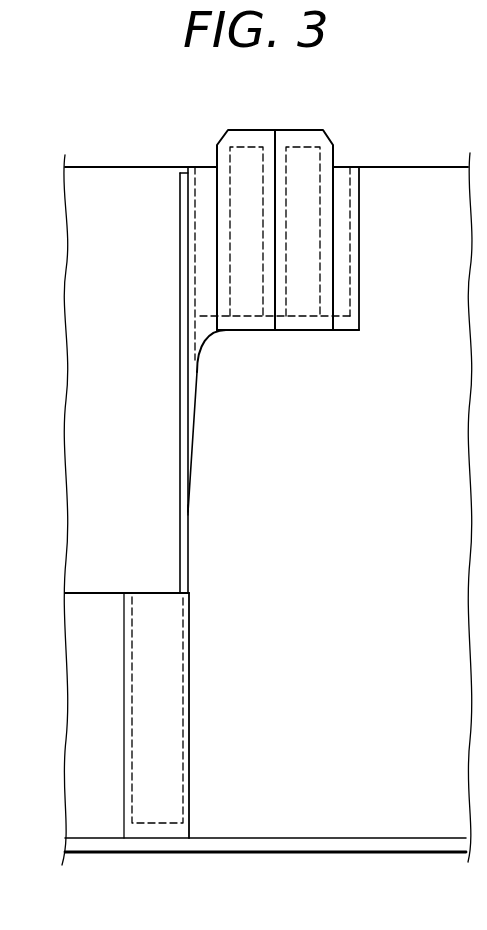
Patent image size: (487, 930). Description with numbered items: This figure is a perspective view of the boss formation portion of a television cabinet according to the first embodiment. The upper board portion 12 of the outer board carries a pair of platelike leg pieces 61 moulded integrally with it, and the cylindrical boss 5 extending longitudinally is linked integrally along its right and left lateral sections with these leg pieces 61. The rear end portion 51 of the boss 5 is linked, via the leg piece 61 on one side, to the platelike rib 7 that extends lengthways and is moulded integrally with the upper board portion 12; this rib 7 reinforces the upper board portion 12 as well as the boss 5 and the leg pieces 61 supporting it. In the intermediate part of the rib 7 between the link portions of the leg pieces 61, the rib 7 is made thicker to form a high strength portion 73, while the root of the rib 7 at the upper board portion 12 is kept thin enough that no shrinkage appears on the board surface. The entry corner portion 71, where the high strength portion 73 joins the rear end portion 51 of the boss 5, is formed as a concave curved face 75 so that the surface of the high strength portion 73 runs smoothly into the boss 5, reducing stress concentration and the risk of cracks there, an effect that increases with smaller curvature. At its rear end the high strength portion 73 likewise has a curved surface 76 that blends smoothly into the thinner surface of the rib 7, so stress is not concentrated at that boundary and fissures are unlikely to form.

The upper board portion 12 is at (442, 166).
The boss 5 is at (250, 160).
The leg piece 61 is at (198, 188).
The rear end portion 51 is at (265, 332).
The rib 7 is at (182, 465).
The entry corner portion 71 is at (210, 359).
The high strength portion 73 is at (197, 437).
The concave curved face 75 is at (215, 342).
The curved surface 76 is at (193, 492).